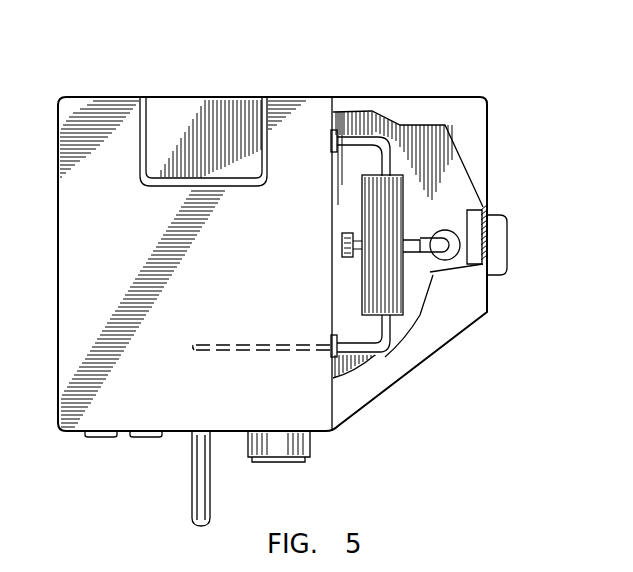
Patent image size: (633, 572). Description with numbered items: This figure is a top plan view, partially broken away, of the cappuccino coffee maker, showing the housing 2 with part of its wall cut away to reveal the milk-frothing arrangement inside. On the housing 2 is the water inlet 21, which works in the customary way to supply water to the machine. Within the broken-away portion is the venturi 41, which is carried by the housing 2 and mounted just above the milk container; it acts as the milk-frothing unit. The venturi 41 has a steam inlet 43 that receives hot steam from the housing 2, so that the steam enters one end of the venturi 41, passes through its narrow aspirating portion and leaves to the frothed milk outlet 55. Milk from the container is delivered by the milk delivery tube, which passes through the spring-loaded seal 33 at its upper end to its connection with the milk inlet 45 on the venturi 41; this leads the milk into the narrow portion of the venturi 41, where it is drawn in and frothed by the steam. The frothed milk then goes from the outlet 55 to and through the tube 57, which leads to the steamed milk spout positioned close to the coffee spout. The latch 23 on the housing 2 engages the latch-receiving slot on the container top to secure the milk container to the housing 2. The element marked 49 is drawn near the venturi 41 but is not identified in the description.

The housing 2 is at (80, 231).
The water inlet 21 is at (175, 108).
The steam inlet 43 is at (350, 112).
The venturi 41 is at (382, 182).
The milk inlet 45 is at (433, 243).
The adjustment screw 49 is at (340, 257).
The latch 23 is at (497, 277).
The seal 33 is at (440, 262).
The frothed milk outlet 55 is at (385, 358).
The tube 57 is at (290, 352).